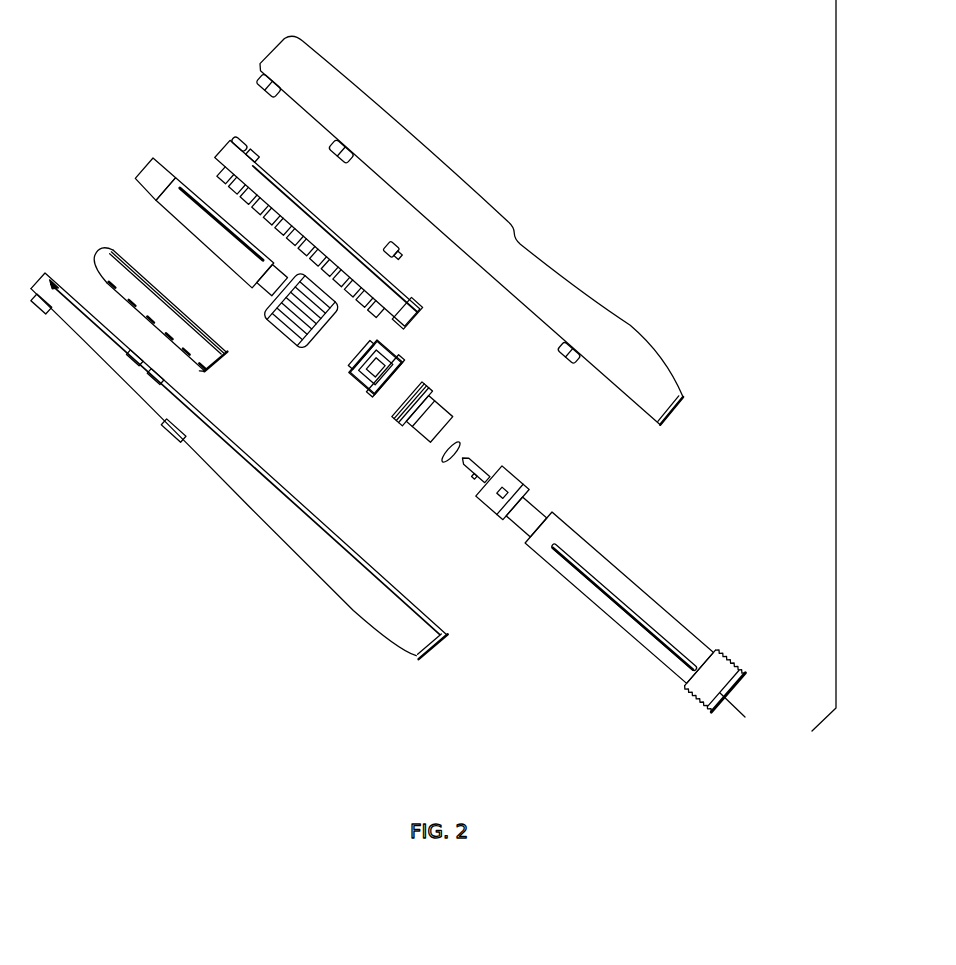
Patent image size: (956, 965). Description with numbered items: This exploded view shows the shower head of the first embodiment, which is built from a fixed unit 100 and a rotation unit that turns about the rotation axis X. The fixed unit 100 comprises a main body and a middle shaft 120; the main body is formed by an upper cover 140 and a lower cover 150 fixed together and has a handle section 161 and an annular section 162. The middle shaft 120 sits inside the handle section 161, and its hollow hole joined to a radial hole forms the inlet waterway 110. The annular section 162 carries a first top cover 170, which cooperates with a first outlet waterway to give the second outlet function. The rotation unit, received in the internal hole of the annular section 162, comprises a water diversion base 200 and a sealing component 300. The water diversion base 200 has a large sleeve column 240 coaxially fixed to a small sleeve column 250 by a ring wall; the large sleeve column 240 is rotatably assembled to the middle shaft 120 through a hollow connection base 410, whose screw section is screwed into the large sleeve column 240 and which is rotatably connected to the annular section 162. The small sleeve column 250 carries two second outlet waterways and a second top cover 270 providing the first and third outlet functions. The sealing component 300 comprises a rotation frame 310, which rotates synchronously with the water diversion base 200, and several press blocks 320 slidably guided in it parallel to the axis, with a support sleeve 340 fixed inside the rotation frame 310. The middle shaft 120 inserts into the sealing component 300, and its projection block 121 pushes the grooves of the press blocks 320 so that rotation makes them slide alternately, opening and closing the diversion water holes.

The fixed unit 100 is at (578, 133).
The inlet waterway 110 is at (512, 483).
The middle shaft 120 is at (645, 611).
The projection block 121 is at (471, 483).
The upper cover 140 is at (440, 180).
The lower cover 150 is at (247, 473).
The handle section 161 is at (634, 320).
The annular section 162 is at (400, 83).
The first top cover 170 is at (233, 150).
The water diversion base 200 is at (137, 157).
The large sleeve column 240 is at (293, 332).
The small sleeve column 250 is at (253, 287).
The second top cover 270 is at (203, 353).
The sealing component 300 is at (404, 351).
The rotation frame 310 is at (362, 356).
The press blocks 320 is at (363, 368).
The support sleeve 340 is at (373, 392).
The connection base 410 is at (445, 423).